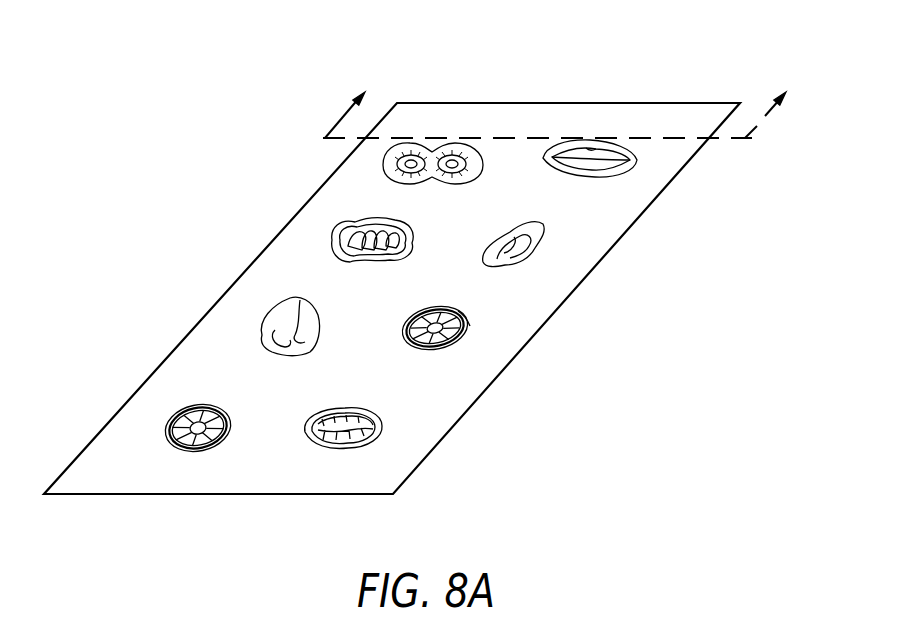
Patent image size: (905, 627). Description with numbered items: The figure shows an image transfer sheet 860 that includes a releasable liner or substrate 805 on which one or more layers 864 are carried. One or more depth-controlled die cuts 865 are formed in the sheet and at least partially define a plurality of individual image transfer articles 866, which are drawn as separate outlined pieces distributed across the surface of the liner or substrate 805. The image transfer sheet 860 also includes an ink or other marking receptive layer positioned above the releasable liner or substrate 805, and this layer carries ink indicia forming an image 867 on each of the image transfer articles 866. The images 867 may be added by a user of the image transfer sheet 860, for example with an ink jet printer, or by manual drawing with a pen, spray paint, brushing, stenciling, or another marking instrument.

The sheet / substrate 805 is at (590, 279).
The facial feature sheet assembly 860 is at (395, 60).
The eye disc 864 is at (462, 311).
The eyes and lips features 865 is at (473, 141).
The teeth and ear features 866 is at (342, 232).
The eye disc and jaw features 867 is at (218, 413).